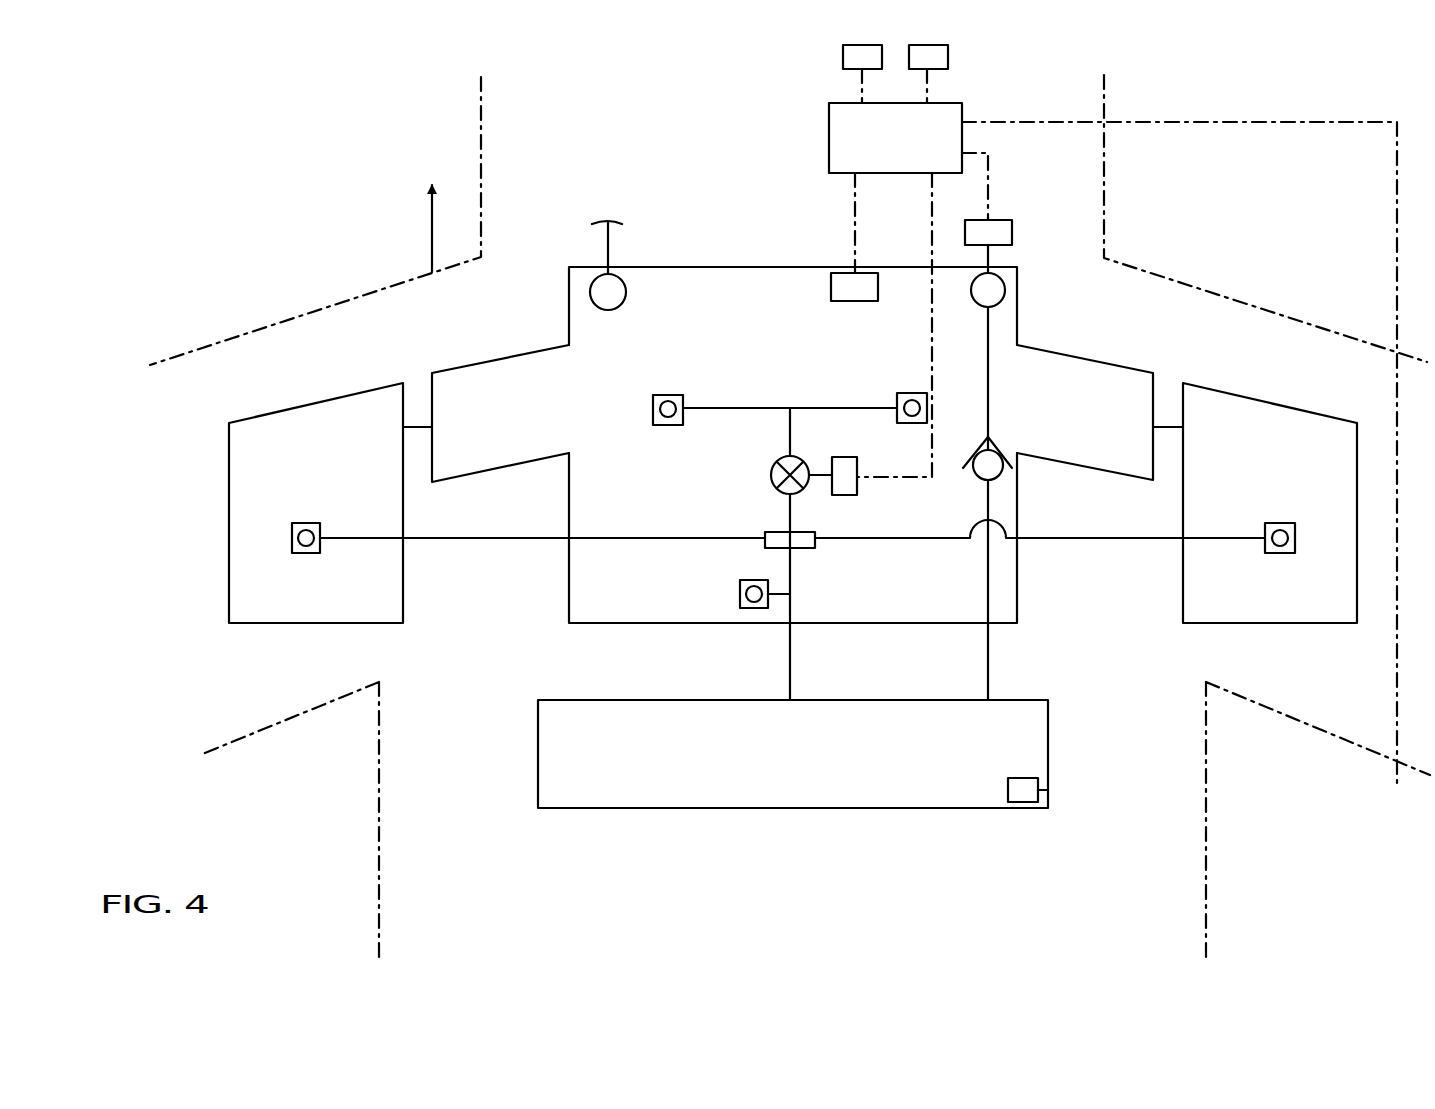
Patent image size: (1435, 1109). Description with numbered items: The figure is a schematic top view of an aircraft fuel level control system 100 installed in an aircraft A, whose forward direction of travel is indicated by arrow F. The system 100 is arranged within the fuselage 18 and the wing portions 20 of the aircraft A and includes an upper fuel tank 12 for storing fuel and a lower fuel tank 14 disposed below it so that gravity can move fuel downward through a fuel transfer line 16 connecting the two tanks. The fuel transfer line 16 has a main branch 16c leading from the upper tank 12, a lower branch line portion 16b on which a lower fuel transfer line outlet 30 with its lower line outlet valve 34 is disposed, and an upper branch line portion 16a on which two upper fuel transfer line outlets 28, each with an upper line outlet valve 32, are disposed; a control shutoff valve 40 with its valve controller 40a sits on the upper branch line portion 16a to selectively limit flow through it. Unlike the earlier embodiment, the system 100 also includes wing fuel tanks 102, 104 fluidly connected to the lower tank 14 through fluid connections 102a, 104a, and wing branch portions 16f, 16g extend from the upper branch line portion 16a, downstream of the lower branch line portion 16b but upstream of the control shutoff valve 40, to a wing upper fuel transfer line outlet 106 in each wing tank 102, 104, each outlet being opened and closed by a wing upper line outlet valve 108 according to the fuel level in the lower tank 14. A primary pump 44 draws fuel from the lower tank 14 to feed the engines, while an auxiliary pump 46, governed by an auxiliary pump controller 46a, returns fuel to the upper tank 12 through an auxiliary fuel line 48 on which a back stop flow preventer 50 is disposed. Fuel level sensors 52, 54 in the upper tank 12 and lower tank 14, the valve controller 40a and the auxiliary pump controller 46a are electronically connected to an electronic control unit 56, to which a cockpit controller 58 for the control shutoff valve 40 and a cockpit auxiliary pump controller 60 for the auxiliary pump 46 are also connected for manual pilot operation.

The upper fuel tank 12 is at (776, 771).
The lower fuel tank 14 is at (768, 392).
The fuel transfer line 16 is at (822, 663).
The upper branch line portion 16a is at (792, 548).
The lower branch line portion 16b is at (780, 610).
The main branch 16c is at (790, 665).
The wing branch portion 16f is at (622, 537).
The wing branch portion 16g is at (1048, 537).
The fuselage 18 is at (602, 698).
The wing portions 20 is at (273, 345).
The upper fuel transfer line outlet 28 is at (664, 417).
The lower fuel transfer line outlet 30 is at (765, 565).
The upper line outlet valve 32 is at (663, 393).
The lower line outlet valve 34 is at (740, 594).
The control shutoff valve 40 is at (775, 483).
The valve controller 40a is at (857, 485).
The primary pump 44 is at (626, 290).
The auxiliary pump 46 is at (1005, 290).
The auxiliary pump controller 46a is at (1012, 230).
The auxiliary fuel line 48 is at (988, 373).
The back stop flow preventer 50 is at (972, 478).
The fuel level sensor 52 is at (1008, 790).
The fuel level sensor 54 is at (831, 285).
The electronic control unit 56 is at (829, 132).
The cockpit controller 58 is at (843, 52).
The cockpit auxiliary pump controller 60 is at (948, 55).
The aircraft fuel level control system 100 is at (305, 760).
The wing fuel tank 102 is at (305, 607).
The fluid connection 102a is at (418, 425).
The wing fuel tank 104 is at (1280, 607).
The fluid connection 104a is at (1165, 425).
The wing upper fuel transfer line outlet 106 is at (308, 530).
The wing upper line outlet valve 108 is at (320, 546).
The aircraft A is at (370, 885).
The forward direction arrow F is at (432, 228).